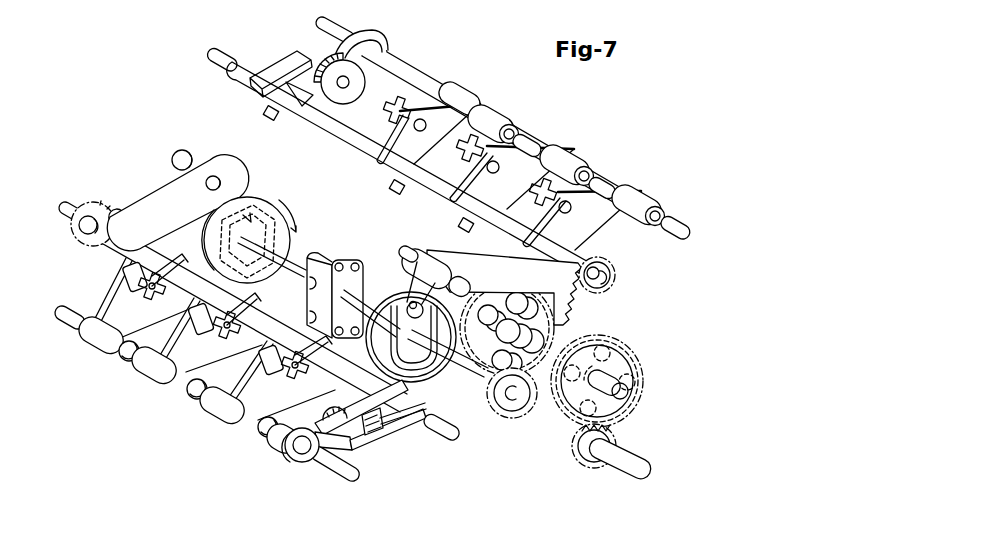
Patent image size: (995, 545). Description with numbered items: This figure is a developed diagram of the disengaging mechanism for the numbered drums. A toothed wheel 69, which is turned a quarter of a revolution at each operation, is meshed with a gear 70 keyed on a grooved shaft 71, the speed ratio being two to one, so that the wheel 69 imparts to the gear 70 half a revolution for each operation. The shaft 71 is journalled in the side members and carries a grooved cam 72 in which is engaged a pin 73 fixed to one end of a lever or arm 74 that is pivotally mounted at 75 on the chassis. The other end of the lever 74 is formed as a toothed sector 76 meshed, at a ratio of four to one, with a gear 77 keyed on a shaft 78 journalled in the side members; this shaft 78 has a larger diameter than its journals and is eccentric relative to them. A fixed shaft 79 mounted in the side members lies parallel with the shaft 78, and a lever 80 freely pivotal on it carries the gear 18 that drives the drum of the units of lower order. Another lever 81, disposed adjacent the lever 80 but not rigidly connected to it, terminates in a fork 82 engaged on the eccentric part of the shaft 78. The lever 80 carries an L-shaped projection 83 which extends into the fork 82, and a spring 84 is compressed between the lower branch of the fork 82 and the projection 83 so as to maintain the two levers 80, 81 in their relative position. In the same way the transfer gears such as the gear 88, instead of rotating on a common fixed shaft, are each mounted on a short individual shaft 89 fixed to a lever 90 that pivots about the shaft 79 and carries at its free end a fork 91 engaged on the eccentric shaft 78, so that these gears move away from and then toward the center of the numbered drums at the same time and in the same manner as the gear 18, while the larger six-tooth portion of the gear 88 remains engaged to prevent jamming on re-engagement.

The gear 18 is at (367, 449).
The toothed wheel 69 is at (496, 301).
The gear 70 is at (513, 409).
The grooved shaft 71 is at (477, 373).
The grooved cam 72 is at (208, 239).
The pin 73 is at (248, 213).
The lever 74 is at (182, 192).
The pivot 75 is at (180, 152).
The toothed sector 76 is at (118, 210).
The gear 77 is at (90, 212).
The shaft 78 is at (450, 436).
The fixed shaft 79 is at (350, 483).
The lever 80 is at (318, 436).
The lever 81 is at (308, 462).
The fork 82 is at (405, 387).
The L-shaped projection 83 is at (392, 423).
The spring 84 is at (397, 428).
The gear 88 is at (303, 337).
The short individual shaft 89 is at (291, 375).
The lever 90 is at (250, 387).
The fork 91 is at (255, 301).